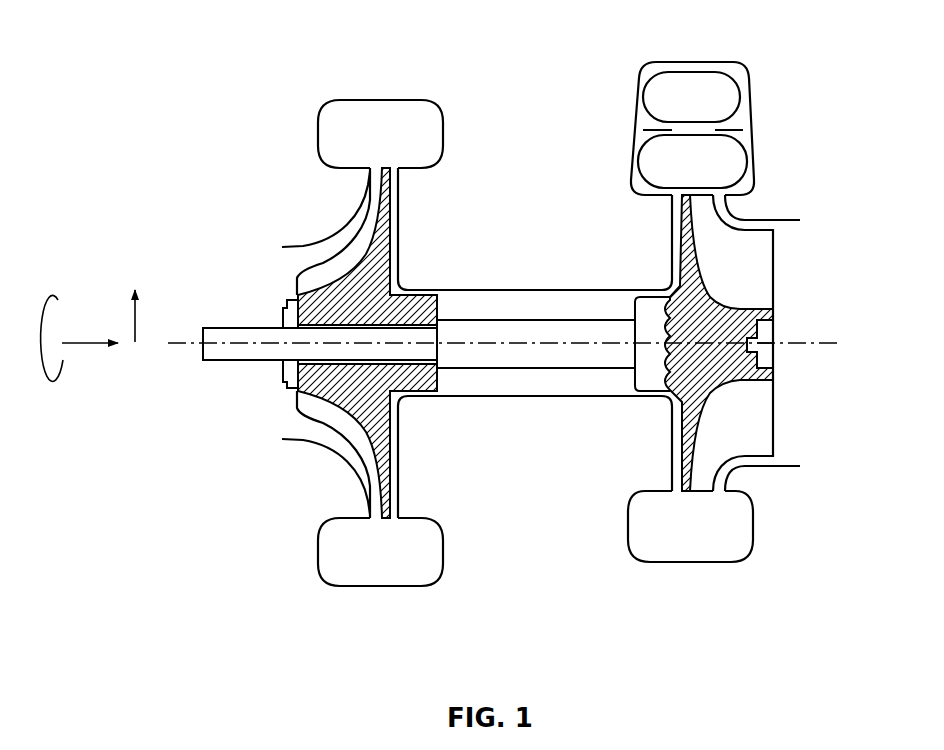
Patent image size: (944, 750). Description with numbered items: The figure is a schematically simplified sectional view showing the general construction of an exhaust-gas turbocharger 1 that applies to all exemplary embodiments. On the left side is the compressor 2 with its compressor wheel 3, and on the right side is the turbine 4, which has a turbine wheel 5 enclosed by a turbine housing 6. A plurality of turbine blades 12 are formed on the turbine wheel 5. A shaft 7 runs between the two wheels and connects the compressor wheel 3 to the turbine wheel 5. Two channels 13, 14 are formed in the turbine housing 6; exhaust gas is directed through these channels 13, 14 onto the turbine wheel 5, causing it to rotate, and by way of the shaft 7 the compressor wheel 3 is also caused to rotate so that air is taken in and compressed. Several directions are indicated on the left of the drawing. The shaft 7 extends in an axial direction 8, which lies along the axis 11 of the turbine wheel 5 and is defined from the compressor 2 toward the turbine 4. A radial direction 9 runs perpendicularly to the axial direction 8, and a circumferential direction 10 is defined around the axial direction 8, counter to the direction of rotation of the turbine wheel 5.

The exhaust-gas turbocharger 1 is at (542, 170).
The compressor 2 is at (315, 235).
The compressor wheel 3 is at (342, 413).
The turbine 4 is at (762, 88).
The turbine wheel 5 is at (745, 378).
The turbine housing 6 is at (755, 152).
The shaft 7 is at (453, 335).
The axial direction 8 is at (80, 343).
The radial direction 9 is at (135, 318).
The circumferential direction 10 is at (63, 323).
The axis 11 is at (820, 345).
The turbine blades 12 is at (765, 265).
The channel 13 is at (667, 167).
The channel 14 is at (670, 93).